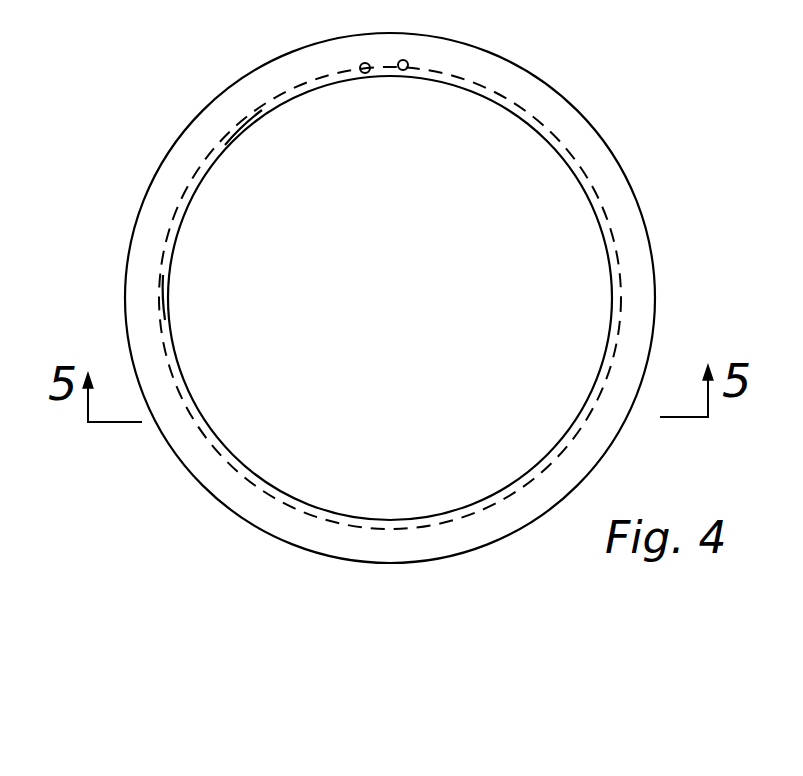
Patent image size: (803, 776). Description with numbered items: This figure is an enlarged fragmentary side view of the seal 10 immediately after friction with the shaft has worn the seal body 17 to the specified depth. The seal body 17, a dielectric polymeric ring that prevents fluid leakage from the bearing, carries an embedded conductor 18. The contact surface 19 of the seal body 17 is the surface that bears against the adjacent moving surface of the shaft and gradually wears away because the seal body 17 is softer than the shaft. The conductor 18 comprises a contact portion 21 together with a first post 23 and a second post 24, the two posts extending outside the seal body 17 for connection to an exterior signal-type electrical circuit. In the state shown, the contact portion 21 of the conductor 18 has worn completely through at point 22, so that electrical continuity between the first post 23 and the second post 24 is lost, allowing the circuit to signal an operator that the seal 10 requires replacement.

The seal 10 is at (155, 150).
The seal body 17 is at (137, 262).
The conductor 18 is at (192, 193).
The contact surface 19 is at (163, 292).
The contact portion 21 is at (240, 130).
The point 22 is at (548, 132).
The first post 23 is at (365, 73).
The second post 24 is at (403, 70).